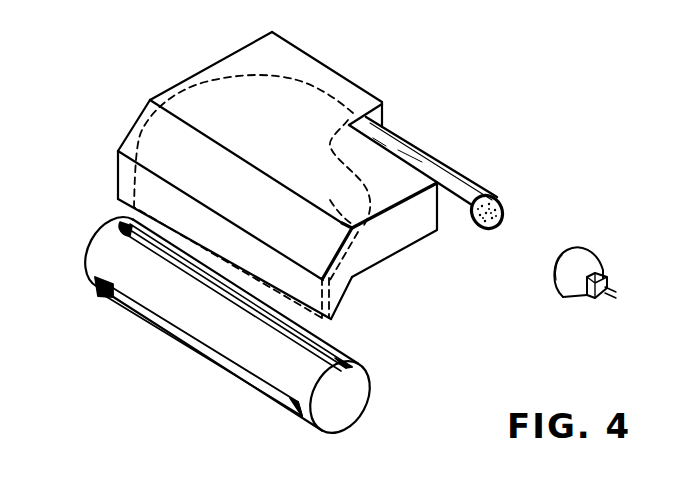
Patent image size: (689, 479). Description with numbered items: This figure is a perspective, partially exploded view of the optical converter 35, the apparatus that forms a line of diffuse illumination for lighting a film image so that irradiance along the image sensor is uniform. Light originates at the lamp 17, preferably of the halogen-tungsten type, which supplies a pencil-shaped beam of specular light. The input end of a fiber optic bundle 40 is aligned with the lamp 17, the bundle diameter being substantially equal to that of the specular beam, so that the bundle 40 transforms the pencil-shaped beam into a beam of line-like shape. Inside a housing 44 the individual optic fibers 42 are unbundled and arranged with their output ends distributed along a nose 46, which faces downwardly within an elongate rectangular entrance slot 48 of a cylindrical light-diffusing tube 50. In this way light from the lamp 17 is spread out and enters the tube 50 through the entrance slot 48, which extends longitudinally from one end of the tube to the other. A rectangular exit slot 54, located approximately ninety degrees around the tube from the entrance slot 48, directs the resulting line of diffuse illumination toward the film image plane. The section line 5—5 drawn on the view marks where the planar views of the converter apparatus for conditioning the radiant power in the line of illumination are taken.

The line 5— 5 is at (113, 190).
The lamp 17 is at (590, 255).
The optical converter 35 is at (427, 122).
The fiber optic bundle 40 is at (476, 183).
The optic fibers 42 is at (201, 94).
The housing 44 is at (388, 243).
The nose 46 is at (334, 322).
The entrance slot 48 is at (120, 230).
The light-diffusing tube 50 is at (360, 400).
The exit slot 54 is at (97, 293).